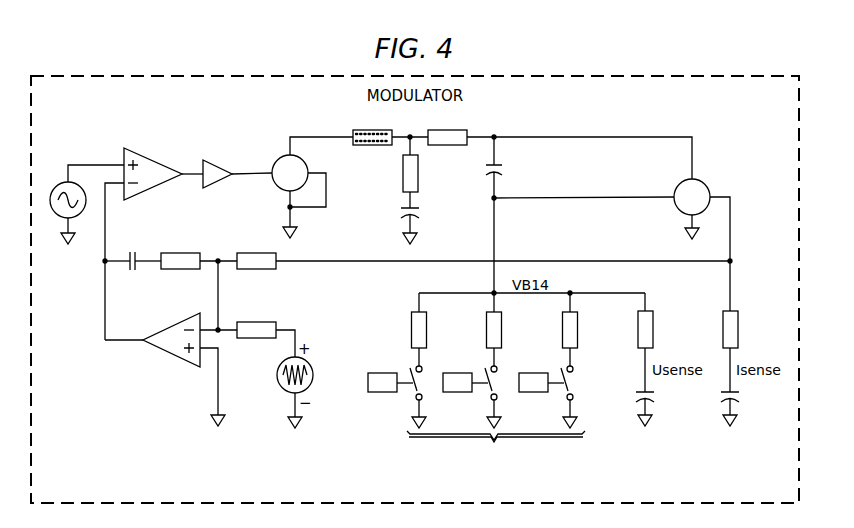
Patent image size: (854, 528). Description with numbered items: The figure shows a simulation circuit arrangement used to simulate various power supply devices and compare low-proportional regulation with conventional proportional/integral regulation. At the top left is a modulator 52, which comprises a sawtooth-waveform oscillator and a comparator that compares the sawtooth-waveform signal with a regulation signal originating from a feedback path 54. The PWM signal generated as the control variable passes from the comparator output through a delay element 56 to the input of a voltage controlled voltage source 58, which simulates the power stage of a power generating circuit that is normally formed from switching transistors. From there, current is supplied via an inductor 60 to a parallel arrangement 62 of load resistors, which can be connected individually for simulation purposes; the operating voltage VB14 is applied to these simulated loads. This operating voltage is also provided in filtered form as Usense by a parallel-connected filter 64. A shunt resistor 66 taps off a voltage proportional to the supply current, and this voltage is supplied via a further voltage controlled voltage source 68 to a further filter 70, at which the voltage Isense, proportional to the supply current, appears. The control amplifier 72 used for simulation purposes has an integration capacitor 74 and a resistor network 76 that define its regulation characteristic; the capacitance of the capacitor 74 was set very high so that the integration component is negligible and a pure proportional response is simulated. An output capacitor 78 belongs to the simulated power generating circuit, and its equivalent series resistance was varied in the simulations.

The modulator 52 is at (185, 137).
The feedback path 54 is at (368, 248).
The delay element 56 is at (218, 186).
The voltage controlled voltage source 58 is at (276, 160).
The inductor 60 is at (374, 146).
The parallel arrangement of load resistors 62 is at (476, 392).
The parallel-connected filter 64 is at (655, 330).
The shunt resistor 66 is at (418, 178).
The further voltage controlled voltage source 68 is at (707, 184).
The further filter 70 is at (740, 330).
The control amplifier 72 is at (173, 355).
The integration capacitor 74 is at (134, 249).
The resistor network 76 is at (181, 250).
The output capacitor 78 is at (418, 216).